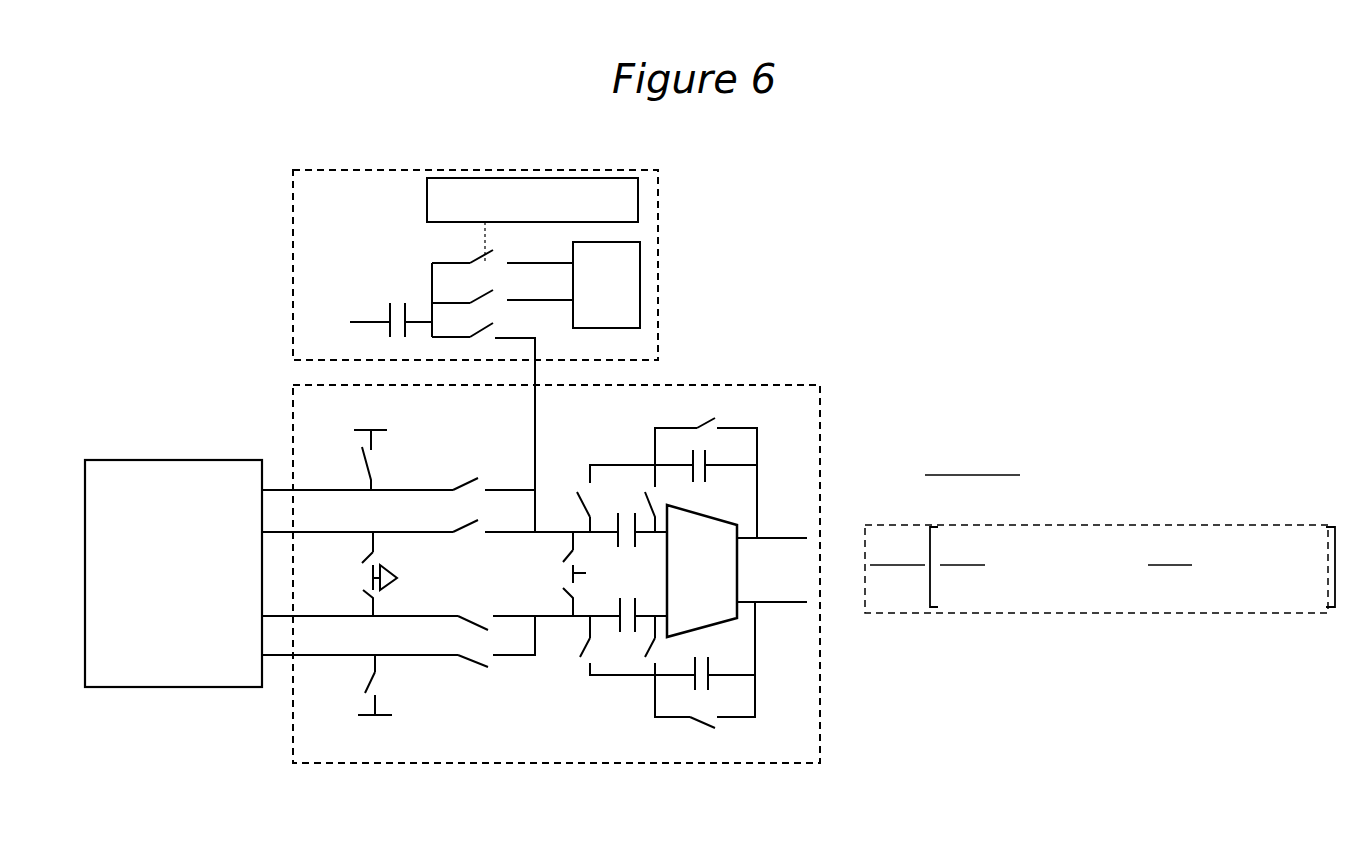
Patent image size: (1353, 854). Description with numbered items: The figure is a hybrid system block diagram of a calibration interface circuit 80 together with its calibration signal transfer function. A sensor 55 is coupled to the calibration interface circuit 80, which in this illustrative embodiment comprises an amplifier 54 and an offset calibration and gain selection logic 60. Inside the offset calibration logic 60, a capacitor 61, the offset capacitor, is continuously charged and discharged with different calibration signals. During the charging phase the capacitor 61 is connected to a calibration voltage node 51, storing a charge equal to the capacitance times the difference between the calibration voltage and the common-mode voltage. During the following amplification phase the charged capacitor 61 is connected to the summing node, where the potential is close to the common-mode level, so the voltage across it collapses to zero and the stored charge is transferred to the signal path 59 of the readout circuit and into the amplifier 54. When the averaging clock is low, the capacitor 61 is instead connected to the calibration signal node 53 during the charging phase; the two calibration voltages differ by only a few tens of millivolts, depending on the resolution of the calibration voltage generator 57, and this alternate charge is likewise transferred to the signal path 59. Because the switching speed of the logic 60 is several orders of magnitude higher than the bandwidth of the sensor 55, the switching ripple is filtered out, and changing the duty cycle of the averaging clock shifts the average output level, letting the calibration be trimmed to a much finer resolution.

The calibration voltage node 51 is at (562, 300).
The calibration signal node 53 is at (520, 262).
The amplifier 54 is at (815, 747).
The sensor 55 is at (158, 460).
The calibration voltage generator 57 is at (630, 252).
The signal path 59 is at (538, 487).
The offset calibration and gain selection logic 60 is at (662, 270).
The capacitor 61 is at (383, 307).
The calibration interface circuit 80 is at (908, 313).